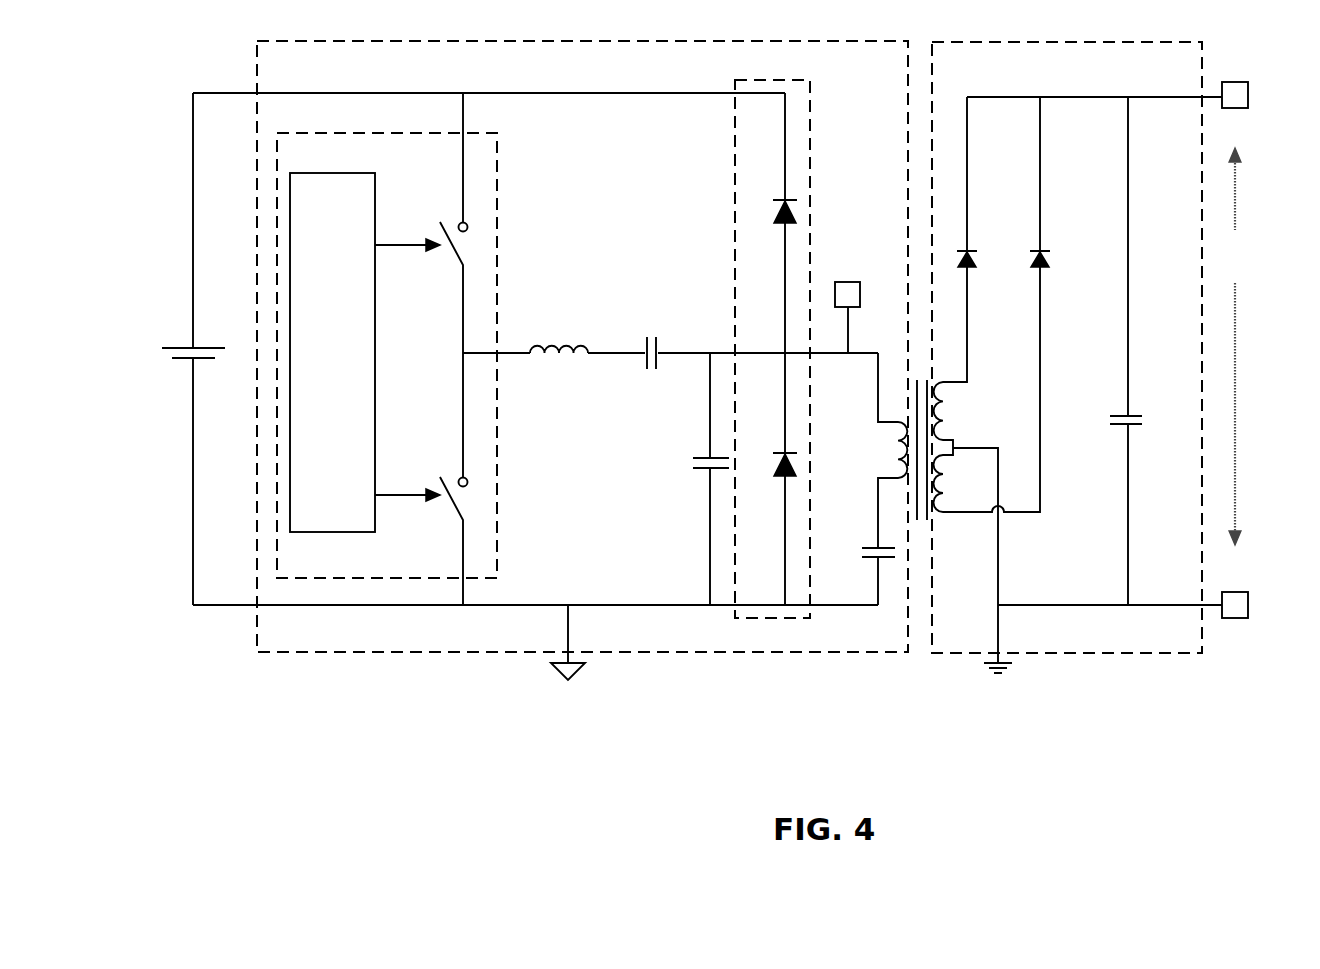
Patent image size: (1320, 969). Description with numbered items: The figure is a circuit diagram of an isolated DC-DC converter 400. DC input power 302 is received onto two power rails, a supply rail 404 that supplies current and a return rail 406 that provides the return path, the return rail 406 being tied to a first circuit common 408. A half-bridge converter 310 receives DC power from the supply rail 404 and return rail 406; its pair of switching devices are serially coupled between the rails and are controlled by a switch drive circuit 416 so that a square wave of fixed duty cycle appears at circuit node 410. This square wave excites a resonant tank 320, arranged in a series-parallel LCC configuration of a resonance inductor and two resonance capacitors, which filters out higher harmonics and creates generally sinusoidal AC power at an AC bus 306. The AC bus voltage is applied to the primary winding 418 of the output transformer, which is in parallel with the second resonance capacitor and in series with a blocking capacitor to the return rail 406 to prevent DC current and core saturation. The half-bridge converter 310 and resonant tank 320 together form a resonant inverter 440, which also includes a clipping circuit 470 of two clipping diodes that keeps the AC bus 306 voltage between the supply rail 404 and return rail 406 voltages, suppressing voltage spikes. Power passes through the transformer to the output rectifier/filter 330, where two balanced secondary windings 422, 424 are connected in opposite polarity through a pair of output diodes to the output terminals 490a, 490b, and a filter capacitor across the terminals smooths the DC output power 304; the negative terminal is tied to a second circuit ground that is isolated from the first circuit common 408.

The DC input power 302 is at (179, 349).
The DC output power 304 is at (1240, 346).
The AC bus 306 is at (866, 282).
The half-bridge converter 310 is at (383, 133).
The resonant tank 320 is at (704, 471).
The output rectifier/filter 330 is at (1068, 42).
The isolated DC-DC converter 400 is at (246, 742).
The supply rail 404 is at (222, 92).
The return rail 406 is at (228, 606).
The first circuit common 408 is at (560, 676).
The circuit node 410 is at (474, 341).
The switch drive circuit 416 is at (365, 352).
The primary winding 418 is at (870, 479).
The secondary winding 422 is at (960, 361).
The secondary winding 424 is at (987, 398).
The resonant inverter 440 is at (385, 40).
The clipping circuit 470 is at (781, 80).
The output terminal 490a is at (1228, 108).
The output terminal 490b is at (1235, 592).